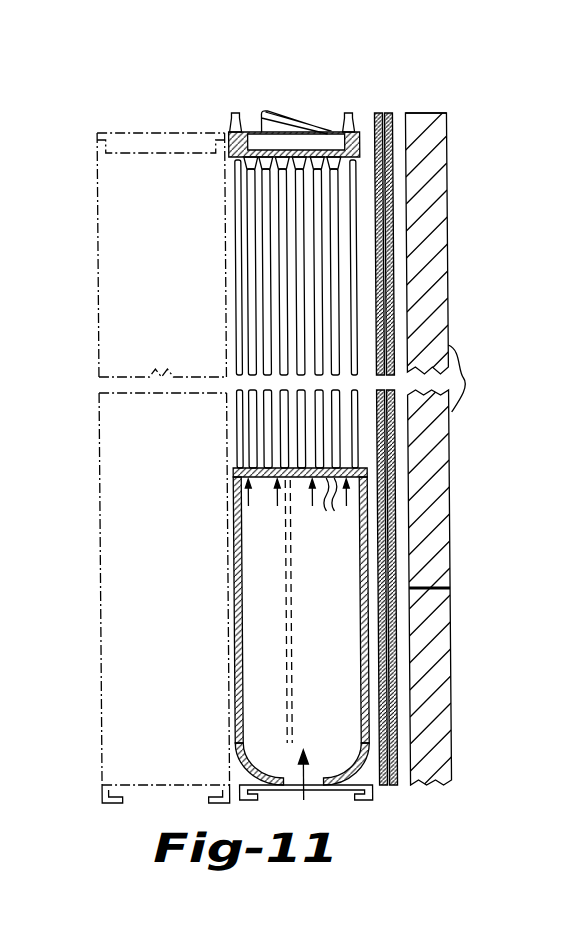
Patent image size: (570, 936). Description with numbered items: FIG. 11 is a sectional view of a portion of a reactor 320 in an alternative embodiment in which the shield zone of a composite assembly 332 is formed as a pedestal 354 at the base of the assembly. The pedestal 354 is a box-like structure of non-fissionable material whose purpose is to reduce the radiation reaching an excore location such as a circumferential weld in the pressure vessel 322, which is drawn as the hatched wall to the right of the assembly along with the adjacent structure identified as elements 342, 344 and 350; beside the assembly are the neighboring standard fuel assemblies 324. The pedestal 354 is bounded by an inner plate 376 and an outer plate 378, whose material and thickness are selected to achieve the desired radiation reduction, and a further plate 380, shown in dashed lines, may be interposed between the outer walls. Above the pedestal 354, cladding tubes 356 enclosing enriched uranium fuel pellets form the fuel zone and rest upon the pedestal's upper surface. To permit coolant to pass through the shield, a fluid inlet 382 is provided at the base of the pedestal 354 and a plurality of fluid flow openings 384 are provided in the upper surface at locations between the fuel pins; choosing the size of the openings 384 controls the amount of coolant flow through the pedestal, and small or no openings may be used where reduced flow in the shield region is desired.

The reactor 320 is at (486, 453).
The pressure vessel 322 is at (425, 113).
The standard fuel assemblies 324 is at (90, 252).
The composite assembly 332 is at (312, 109).
The first shim plate 342 is at (381, 113).
The second shim plate 344 is at (391, 113).
The pool floor joint 350 is at (448, 588).
The pedestal 354 is at (302, 656).
The cladding tubes 356 is at (226, 267).
The inner plate 376 is at (243, 626).
The outer plate 378 is at (359, 645).
The plate 380 is at (292, 628).
The fluid inlet 382 is at (463, 834).
The fluid flow openings 384 is at (303, 549).